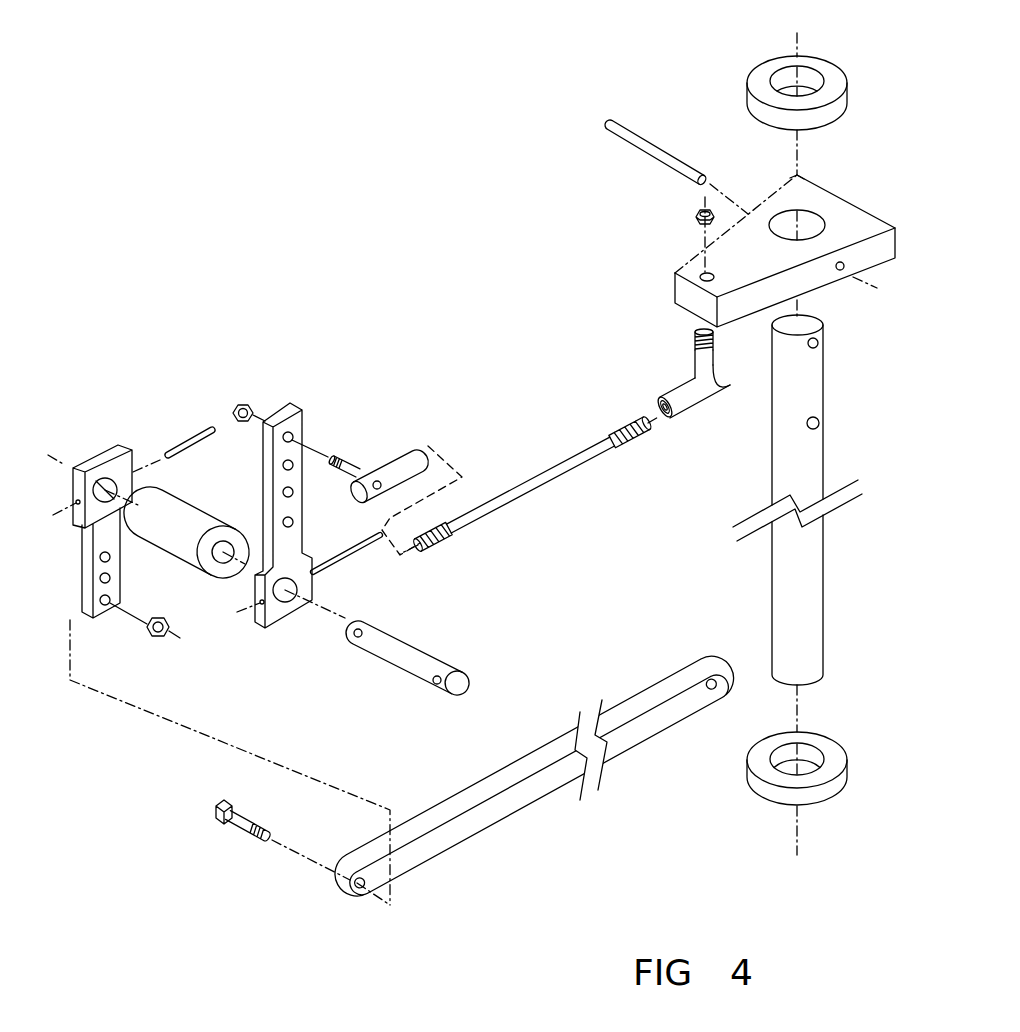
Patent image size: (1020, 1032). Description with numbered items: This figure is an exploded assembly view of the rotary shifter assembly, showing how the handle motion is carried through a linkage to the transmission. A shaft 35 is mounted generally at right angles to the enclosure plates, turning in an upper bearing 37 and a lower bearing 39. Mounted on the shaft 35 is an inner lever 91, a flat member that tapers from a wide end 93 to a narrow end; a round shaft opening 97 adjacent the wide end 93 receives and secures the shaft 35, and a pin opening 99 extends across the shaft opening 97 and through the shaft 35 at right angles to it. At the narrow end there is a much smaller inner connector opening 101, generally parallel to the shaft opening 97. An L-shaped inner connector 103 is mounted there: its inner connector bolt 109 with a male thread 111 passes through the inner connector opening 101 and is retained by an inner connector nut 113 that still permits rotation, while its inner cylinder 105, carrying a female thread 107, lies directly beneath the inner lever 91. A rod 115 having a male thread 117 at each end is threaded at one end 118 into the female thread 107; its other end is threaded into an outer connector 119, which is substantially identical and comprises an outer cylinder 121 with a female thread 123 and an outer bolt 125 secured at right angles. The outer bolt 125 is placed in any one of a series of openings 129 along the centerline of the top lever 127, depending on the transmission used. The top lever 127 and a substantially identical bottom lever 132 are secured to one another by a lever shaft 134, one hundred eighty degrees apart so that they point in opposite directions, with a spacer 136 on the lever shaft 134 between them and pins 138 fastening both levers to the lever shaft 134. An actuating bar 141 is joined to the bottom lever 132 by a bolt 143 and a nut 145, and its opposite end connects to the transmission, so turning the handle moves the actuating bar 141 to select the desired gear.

The shaft 35 is at (773, 447).
The upper bearing 37 is at (763, 65).
The lower bearing 39 is at (775, 793).
The inner lever 91 is at (769, 266).
The wide end 93 is at (805, 177).
The shaft opening 97 is at (813, 228).
The pin opening 99 is at (840, 270).
The inner connector opening 101 is at (699, 275).
The inner connector 103 is at (692, 417).
The inner cylinder 105 is at (684, 393).
The female thread 107 is at (657, 403).
The inner connector bolt 109 is at (702, 363).
The male thread 111 is at (713, 342).
The inner connector nut 113 is at (696, 216).
The rod 115 is at (530, 492).
The male thread 117 is at (443, 543).
The end 118 is at (616, 420).
The outer connector 119 is at (410, 455).
The outer cylinder 121 is at (407, 432).
The female thread 123 is at (432, 447).
The outer bolt 125 is at (356, 465).
The top lever 127 is at (277, 515).
The openings 129 is at (293, 522).
The bottom lever 132 is at (110, 560).
The lever shaft 134 is at (395, 640).
The spacer 136 is at (173, 512).
The pins 138 is at (192, 437).
The actuating bar 141 is at (462, 835).
The bolt 143 is at (235, 827).
The nut 145 is at (160, 637).